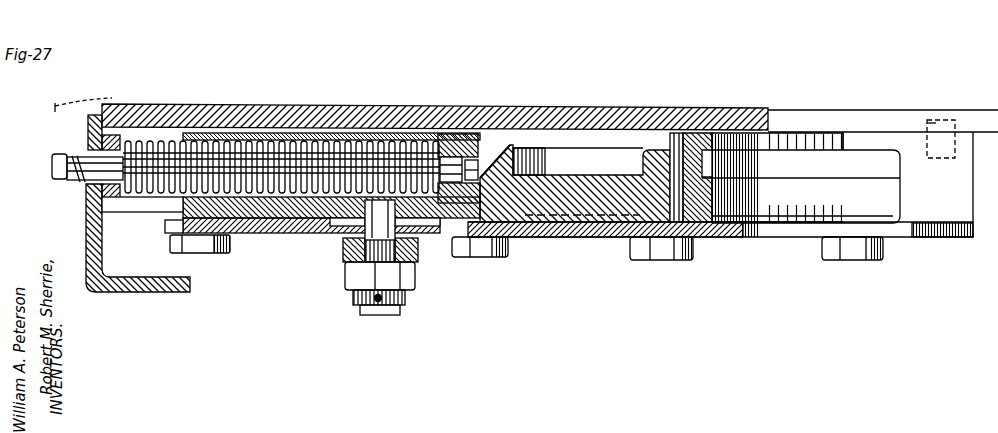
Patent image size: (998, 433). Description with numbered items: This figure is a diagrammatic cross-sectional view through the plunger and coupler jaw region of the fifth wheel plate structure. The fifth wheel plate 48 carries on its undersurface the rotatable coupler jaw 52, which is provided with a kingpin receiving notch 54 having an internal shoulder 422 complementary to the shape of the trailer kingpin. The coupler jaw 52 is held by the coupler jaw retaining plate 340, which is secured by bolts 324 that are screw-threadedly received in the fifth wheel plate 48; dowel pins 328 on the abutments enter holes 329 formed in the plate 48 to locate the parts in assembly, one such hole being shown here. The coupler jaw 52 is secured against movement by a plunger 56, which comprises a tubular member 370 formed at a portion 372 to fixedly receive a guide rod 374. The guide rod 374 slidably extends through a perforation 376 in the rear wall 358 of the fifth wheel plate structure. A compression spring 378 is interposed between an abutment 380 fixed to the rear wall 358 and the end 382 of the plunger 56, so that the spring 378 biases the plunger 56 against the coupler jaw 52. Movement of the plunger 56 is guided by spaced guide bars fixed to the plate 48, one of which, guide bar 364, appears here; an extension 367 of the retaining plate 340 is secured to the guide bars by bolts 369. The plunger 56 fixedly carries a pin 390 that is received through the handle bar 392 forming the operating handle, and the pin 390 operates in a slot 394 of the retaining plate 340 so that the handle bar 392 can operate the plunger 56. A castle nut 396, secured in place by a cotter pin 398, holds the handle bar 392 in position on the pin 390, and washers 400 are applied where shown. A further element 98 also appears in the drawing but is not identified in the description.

The fifth wheel plate 48 is at (743, 109).
The coupler jaw 52 is at (690, 130).
The kingpin receiving notch 54 is at (757, 208).
The plunger 56 is at (390, 135).
The adjusting screw head 98 is at (458, 118).
The bolts 324 is at (845, 260).
The dowel pins 328 is at (950, 118).
The holes 329 is at (926, 123).
The coupler jaw retaining plate 340 is at (655, 260).
The rear wall 358 is at (98, 226).
The guide bar 364 is at (160, 207).
The extension 367 is at (243, 228).
The bolts 369 is at (193, 246).
The tubular member 370 is at (435, 135).
The formed portion 372 is at (510, 143).
The guide rod 374 is at (490, 140).
The perforation 376 is at (84, 150).
The compression spring 378 is at (328, 140).
The abutment 380 is at (117, 135).
The end of plunger 382 is at (480, 165).
The pin 390 is at (378, 260).
The handle bar 392 is at (345, 248).
The slot 394 is at (468, 240).
The castle nut 396 is at (405, 296).
The cotter pin 398 is at (400, 306).
The washers 400 is at (418, 240).
The internal shoulder 422 is at (797, 177).